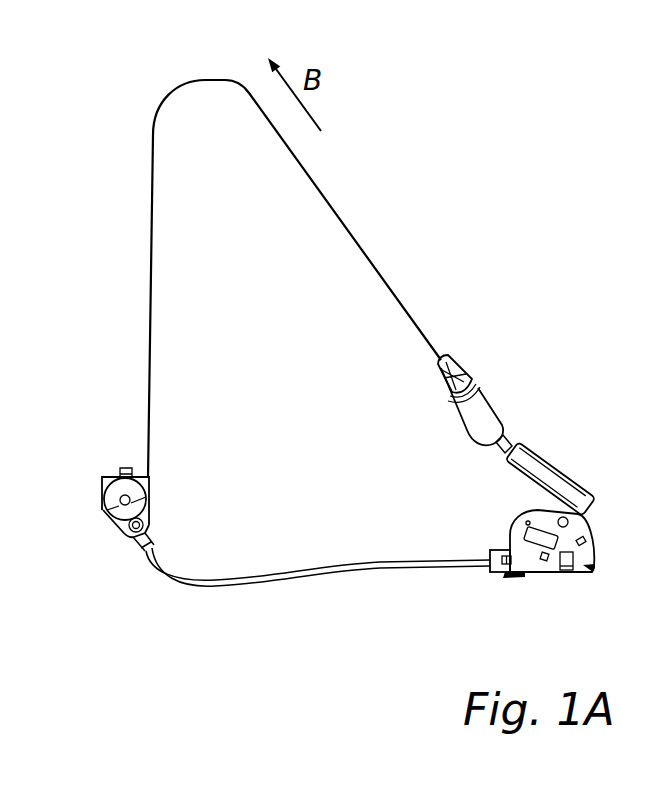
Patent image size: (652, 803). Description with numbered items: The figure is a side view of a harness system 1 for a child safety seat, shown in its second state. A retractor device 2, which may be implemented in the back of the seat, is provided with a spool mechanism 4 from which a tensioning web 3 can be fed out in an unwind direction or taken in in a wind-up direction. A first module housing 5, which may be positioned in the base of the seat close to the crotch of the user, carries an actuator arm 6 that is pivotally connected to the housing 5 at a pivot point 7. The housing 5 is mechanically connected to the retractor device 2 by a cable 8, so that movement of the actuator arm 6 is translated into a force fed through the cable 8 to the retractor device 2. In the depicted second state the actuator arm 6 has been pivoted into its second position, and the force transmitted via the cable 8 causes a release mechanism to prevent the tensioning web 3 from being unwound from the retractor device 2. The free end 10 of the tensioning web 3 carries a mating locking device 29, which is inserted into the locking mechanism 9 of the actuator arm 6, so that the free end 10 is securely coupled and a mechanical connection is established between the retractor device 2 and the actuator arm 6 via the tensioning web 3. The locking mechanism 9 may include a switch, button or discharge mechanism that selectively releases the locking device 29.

The harness system 1 is at (484, 201).
The retractor device 2 is at (118, 527).
The tensioning web 3 is at (336, 203).
The spool mechanism 4 is at (138, 504).
The first module housing 5 is at (532, 565).
The actuator arm 6 is at (535, 477).
The pivot point 7 is at (569, 521).
The cable 8 is at (370, 570).
The locking mechanism 9 is at (484, 417).
The free end 10 is at (445, 355).
The locking device 29 is at (466, 372).